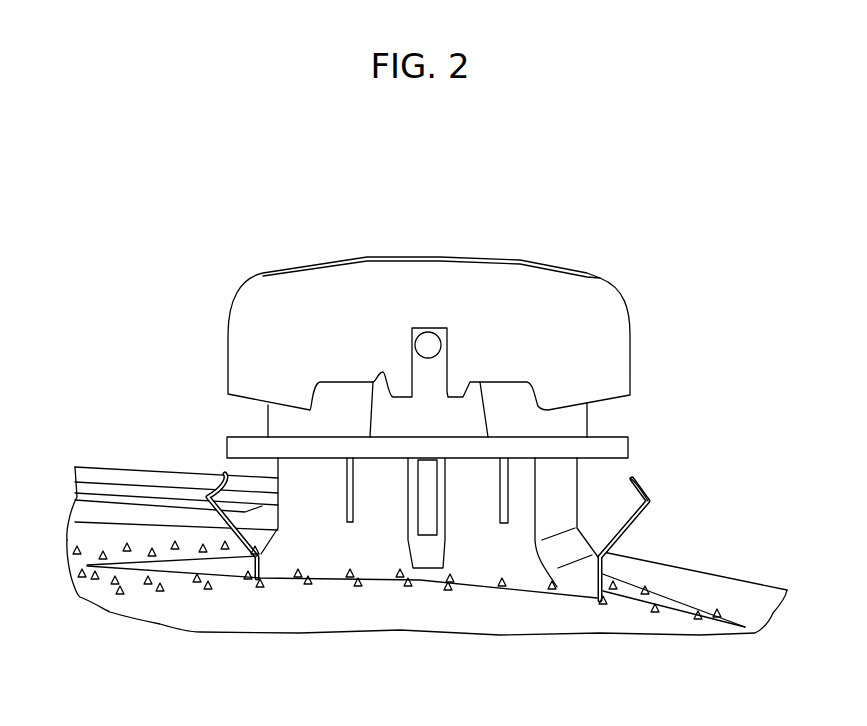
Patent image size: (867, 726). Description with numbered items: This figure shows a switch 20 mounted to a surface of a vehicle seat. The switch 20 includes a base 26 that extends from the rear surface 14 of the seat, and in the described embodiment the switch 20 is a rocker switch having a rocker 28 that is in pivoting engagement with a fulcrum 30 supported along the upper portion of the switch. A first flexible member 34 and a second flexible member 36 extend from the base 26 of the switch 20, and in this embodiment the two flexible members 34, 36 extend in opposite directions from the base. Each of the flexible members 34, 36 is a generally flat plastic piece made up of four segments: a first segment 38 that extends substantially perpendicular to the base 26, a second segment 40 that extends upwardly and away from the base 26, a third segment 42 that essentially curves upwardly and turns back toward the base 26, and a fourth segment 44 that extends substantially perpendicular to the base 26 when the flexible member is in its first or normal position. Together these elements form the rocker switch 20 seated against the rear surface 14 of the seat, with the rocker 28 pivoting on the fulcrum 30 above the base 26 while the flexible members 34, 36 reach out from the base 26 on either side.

The rear surface 14 is at (216, 619).
The switch 20 is at (630, 333).
The base 26 is at (578, 480).
The rocker 28 is at (528, 258).
The fulcrum 30 is at (428, 332).
The first flexible member 34 is at (628, 535).
The second flexible member 36 is at (208, 488).
The first segment 38 is at (620, 580).
The second segment 40 is at (635, 522).
The third segment 42 is at (643, 490).
The fourth segment 44 is at (627, 482).